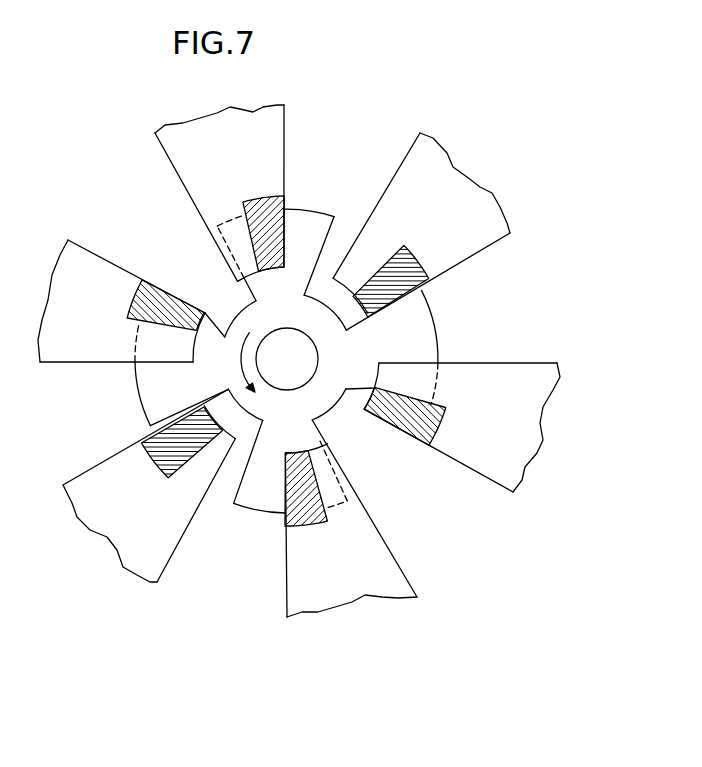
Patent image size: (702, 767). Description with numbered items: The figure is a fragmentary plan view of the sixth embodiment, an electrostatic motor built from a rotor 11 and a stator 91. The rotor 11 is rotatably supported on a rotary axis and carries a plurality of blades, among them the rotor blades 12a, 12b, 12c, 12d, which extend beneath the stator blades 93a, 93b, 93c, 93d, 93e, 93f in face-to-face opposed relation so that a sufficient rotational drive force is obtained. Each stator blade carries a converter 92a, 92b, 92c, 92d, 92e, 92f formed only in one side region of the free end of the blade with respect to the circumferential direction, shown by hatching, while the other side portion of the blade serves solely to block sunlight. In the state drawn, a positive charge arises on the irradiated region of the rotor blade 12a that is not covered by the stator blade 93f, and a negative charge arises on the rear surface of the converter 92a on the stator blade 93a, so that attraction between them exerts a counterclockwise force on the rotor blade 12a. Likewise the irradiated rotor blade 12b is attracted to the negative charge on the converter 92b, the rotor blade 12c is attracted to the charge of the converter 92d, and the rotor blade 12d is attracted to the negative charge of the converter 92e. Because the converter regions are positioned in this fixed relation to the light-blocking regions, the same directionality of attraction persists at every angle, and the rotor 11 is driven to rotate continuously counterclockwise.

The rotor 11 is at (321, 369).
The rotor blade 12a is at (432, 340).
The rotor blade 12b is at (307, 221).
The rotor blade 12c is at (153, 392).
The rotor blade 12d is at (253, 500).
The stator 91 is at (303, 361).
The converter 92a is at (410, 262).
The converter 92b is at (260, 198).
The converter 92c is at (135, 302).
The converter 92d is at (168, 478).
The converter 92e is at (310, 528).
The converter 92f is at (437, 432).
The stator blade 93a is at (405, 168).
The stator blade 93b is at (185, 153).
The stator blade 93c is at (80, 350).
The stator blade 93d is at (167, 540).
The stator blade 93e is at (385, 553).
The stator blade 93f is at (520, 370).